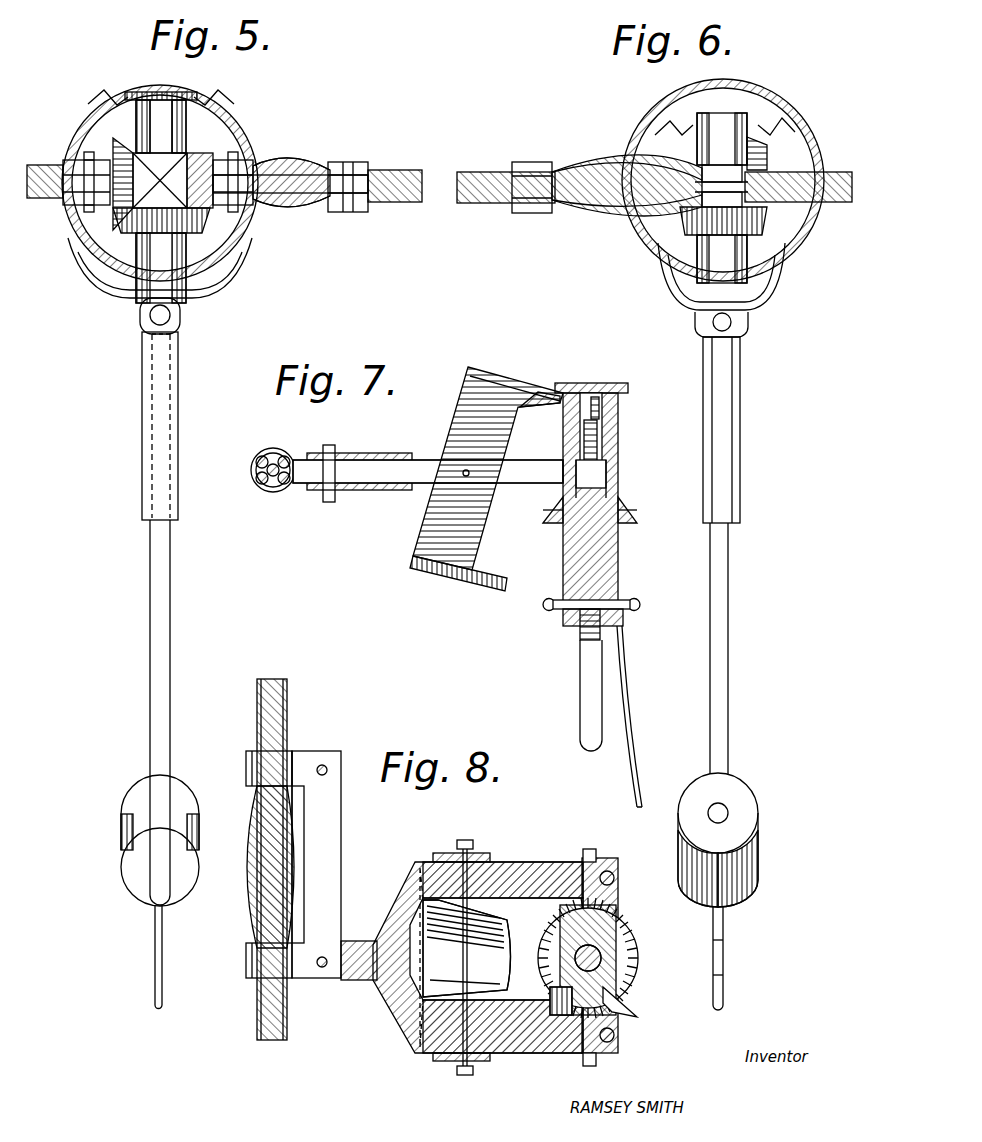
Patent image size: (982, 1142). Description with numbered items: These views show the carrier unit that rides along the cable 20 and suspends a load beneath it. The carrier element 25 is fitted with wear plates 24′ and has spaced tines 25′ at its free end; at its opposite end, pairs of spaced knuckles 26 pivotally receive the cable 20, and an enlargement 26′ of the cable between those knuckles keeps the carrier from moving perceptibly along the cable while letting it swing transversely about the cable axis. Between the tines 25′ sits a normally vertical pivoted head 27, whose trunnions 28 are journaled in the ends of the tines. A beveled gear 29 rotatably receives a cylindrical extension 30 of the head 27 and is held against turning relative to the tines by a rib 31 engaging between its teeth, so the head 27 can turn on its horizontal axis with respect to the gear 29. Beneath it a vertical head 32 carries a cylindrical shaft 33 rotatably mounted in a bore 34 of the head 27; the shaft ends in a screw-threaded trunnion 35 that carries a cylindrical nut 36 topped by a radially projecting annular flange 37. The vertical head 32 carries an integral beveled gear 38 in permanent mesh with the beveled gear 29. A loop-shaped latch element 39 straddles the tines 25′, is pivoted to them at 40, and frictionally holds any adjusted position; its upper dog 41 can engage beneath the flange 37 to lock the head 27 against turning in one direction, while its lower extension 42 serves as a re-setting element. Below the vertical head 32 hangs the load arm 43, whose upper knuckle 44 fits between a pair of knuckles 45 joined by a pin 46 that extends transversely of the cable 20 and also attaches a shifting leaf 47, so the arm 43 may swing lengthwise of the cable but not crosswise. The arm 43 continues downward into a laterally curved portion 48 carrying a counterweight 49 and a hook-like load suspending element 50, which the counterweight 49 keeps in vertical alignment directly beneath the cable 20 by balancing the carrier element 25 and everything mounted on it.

In FIG. 5, the cable 20 is at (395, 170).
In FIG. 6, the cable 20 is at (475, 172).
In FIG. 7, the cable 20 is at (262, 490).
In FIG. 8, the cable 20 is at (287, 695).
In FIG. 7, the wear plates 24′ is at (365, 453).
In FIG. 8, the carrier element 25 is at (385, 1022).
In FIG. 7, the tines 25′ is at (528, 485).
In FIG. 8, the tines 25′ is at (532, 872).
In FIG. 5, the knuckles 26 is at (345, 162).
In FIG. 6, the knuckles 26 is at (533, 162).
In FIG. 7, the knuckles 26 is at (273, 448).
In FIG. 8, the knuckles 26 is at (246, 764).
In FIG. 5, the enlargement 26′ is at (290, 200).
In FIG. 6, the enlargement 26′ is at (585, 205).
In FIG. 8, the enlargement 26′ is at (280, 838).
In FIG. 5, the pivoted head 27 is at (205, 178).
In FIG. 6, the pivoted head 27 is at (730, 150).
In FIG. 7, the pivoted head 27 is at (606, 466).
In FIG. 8, the pivoted head 27 is at (605, 925).
In FIG. 5, the trunnions 28 is at (72, 170).
In FIG. 8, the trunnions 28 is at (592, 849).
In FIG. 5, the beveled gear 29 is at (120, 205).
In FIG. 6, the beveled gear 29 is at (760, 160).
In FIG. 8, the beveled gear 29 is at (637, 1012).
In FIG. 8, the cylindrical extension 30 is at (598, 1012).
In FIG. 8, the rib 31 is at (548, 1040).
In FIG. 5, the vertical head 32 is at (175, 258).
In FIG. 6, the vertical head 32 is at (735, 252).
In FIG. 7, the vertical head 32 is at (620, 553).
In FIG. 7, the cylindrical shaft 33 is at (598, 443).
In FIG. 7, the bore 34 is at (612, 482).
In FIG. 7, the screw-threaded trunnion 35 is at (600, 403).
In FIG. 5, the cylindrical nut 36 is at (180, 115).
In FIG. 7, the cylindrical nut 36 is at (602, 420).
In FIG. 5, the annular flange 37 is at (150, 93).
In FIG. 7, the annular flange 37 is at (628, 388).
In FIG. 5, the beveled gear 38 is at (125, 265).
In FIG. 6, the beveled gear 38 is at (690, 225).
In FIG. 7, the beveled gear 38 is at (637, 513).
In FIG. 8, the beveled gear 38 is at (640, 950).
In FIG. 5, the latch element 39 is at (245, 118).
In FIG. 6, the latch element 39 is at (785, 110).
In FIG. 7, the latch element 39 is at (460, 418).
In FIG. 8, the latch element 39 is at (445, 853).
In FIG. 7, the pivot 40 is at (463, 476).
In FIG. 8, the pivot 40 is at (465, 840).
In FIG. 5, the dog 41 is at (110, 95).
In FIG. 6, the dog 41 is at (725, 136).
In FIG. 7, the dog 41 is at (545, 405).
In FIG. 5, the extension 42 is at (130, 298).
In FIG. 6, the extension 42 is at (680, 300).
In FIG. 7, the extension 42 is at (480, 578).
In FIG. 8, the extension 42 is at (470, 985).
In FIG. 5, the load arm 43 is at (150, 535).
In FIG. 6, the load arm 43 is at (722, 394).
In FIG. 7, the load arm 43 is at (579, 697).
In FIG. 7, the knuckle 44 is at (600, 592).
In FIG. 6, the knuckles 45 is at (738, 324).
In FIG. 7, the knuckles 45 is at (565, 626).
In FIG. 5, the pin 46 is at (170, 316).
In FIG. 7, the pin 46 is at (612, 608).
In FIG. 5, the shifting leaf 47 is at (180, 414).
In FIG. 6, the shifting leaf 47 is at (735, 445).
In FIG. 7, the shifting leaf 47 is at (630, 720).
In FIG. 5, the laterally curved portion 48 is at (158, 878).
In FIG. 6, the laterally curved portion 48 is at (728, 750).
In FIG. 5, the counterweight 49 is at (130, 818).
In FIG. 6, the counterweight 49 is at (750, 856).
In FIG. 5, the load suspending element 50 is at (155, 966).
In FIG. 6, the load suspending element 50 is at (723, 986).